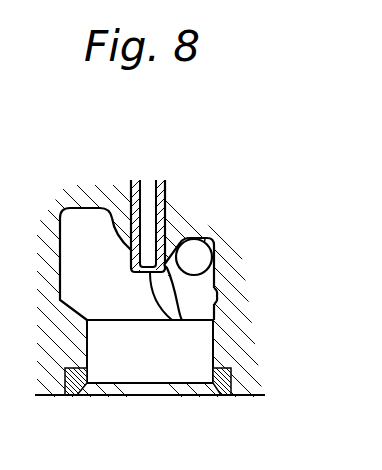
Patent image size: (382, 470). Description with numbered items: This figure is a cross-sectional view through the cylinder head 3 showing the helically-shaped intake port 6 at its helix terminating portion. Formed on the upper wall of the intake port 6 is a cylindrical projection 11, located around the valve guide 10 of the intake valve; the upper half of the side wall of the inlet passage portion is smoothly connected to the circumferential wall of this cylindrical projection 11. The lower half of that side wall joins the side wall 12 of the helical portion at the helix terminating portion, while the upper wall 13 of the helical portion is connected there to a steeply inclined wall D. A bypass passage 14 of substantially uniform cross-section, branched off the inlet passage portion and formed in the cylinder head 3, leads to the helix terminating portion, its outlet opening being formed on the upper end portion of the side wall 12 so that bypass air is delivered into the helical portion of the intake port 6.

The cylinder head 3 is at (232, 239).
The helically-shaped intake port 6 is at (100, 282).
The valve guide 10 is at (164, 200).
The cylindrical projection 11 is at (110, 211).
The side wall of the helical portion 12 is at (216, 303).
The upper wall of the helical portion 13 is at (210, 238).
The bypass passage 14 is at (200, 258).
The steeply inclined wall D is at (175, 274).